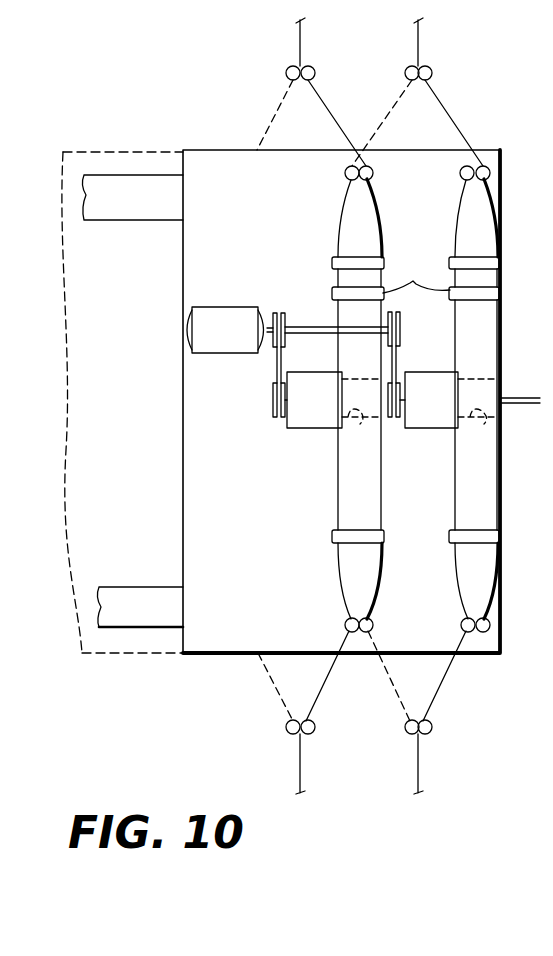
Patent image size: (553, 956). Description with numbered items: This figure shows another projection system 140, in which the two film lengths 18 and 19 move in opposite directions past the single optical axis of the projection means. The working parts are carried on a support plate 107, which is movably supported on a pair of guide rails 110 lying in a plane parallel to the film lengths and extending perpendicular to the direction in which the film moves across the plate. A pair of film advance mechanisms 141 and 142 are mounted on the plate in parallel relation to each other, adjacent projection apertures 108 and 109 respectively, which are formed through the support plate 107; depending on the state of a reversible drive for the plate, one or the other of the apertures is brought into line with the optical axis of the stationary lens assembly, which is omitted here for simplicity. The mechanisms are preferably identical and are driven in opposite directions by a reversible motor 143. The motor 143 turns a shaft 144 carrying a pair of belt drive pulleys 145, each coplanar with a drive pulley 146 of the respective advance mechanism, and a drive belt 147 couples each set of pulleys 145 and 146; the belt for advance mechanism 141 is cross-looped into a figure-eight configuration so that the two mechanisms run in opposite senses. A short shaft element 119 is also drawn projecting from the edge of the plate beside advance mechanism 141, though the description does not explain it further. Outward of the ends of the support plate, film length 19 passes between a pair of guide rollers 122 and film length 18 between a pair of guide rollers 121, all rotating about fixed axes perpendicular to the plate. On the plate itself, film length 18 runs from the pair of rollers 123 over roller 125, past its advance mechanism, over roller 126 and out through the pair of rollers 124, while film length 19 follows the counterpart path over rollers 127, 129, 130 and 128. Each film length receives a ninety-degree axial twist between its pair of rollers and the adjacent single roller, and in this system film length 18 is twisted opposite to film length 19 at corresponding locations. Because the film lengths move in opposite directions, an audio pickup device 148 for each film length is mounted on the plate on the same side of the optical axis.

The projection system 140 is at (174, 88).
The support plate 107 is at (217, 655).
The guide rails 110 is at (117, 200).
The guide rollers 122 is at (405, 72).
The guide rollers 121 is at (405, 728).
The guide rollers 128 is at (345, 172).
The guide rollers 124 is at (461, 172).
The guide rollers 127 is at (345, 625).
The guide rollers 123 is at (461, 624).
The film length 19 is at (347, 495).
The film length 18 is at (467, 493).
The guide roller 130 is at (338, 250).
The guide roller 126 is at (462, 255).
The guide roller 129 is at (333, 540).
The guide roller 125 is at (463, 540).
The audio pickup device 148 is at (416, 276).
The reversible motor 143 is at (238, 307).
The shaft 144 is at (303, 325).
The belt drive pulleys 145 is at (273, 345).
The drive belt 147 is at (277, 366).
The drive pulleys 146 is at (273, 405).
The film advance mechanism 142 is at (295, 428).
The film advance mechanism 141 is at (427, 412).
The projection aperture 109 is at (353, 413).
The projection aperture 108 is at (497, 427).
The output shaft 119 is at (533, 382).